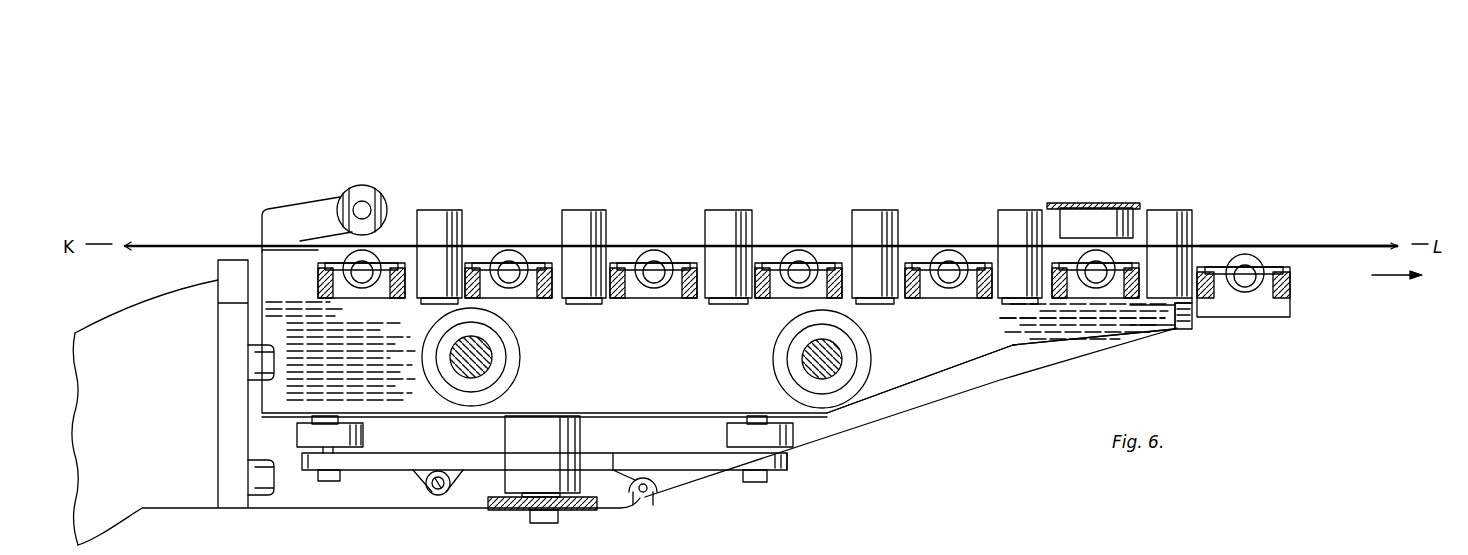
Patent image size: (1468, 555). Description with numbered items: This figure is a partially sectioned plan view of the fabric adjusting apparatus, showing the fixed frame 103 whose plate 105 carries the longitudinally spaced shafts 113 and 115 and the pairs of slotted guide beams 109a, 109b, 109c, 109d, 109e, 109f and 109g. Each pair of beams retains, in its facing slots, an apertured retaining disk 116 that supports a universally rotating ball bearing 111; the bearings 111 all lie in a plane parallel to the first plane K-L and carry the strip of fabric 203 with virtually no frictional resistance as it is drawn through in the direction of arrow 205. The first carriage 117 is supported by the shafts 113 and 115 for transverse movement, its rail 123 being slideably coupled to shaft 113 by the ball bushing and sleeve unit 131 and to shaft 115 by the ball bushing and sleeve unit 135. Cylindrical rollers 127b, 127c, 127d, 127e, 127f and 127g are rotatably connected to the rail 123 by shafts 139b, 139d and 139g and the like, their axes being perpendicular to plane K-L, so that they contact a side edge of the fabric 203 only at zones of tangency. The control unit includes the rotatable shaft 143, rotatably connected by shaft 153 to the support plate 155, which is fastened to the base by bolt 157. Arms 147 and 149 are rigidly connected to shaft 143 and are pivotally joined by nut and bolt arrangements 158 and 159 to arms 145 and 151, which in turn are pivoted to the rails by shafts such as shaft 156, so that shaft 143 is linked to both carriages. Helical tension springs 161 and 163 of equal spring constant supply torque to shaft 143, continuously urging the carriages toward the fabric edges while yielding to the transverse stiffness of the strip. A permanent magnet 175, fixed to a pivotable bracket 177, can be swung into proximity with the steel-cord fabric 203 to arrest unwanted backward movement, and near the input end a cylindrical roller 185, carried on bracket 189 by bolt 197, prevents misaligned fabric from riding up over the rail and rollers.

The fixed frame 103 is at (954, 407).
The plate 105 is at (893, 405).
The slotted guide beam 109a is at (333, 300).
The slotted guide beam 109b is at (480, 300).
The slotted guide beam 109c is at (624, 300).
The slotted guide beam 109d is at (798, 280).
The slotted guide beam 109e is at (918, 300).
The slotted guide beam 109f is at (1065, 300).
The slotted guide beam 109g is at (1222, 318).
The universally rotating ball bearing 111 is at (372, 254).
The shaft 113 is at (482, 357).
The shaft 115 is at (812, 350).
The apertured retaining disk 116 is at (640, 262).
The first carriage 117 is at (999, 387).
The rail 123 is at (938, 358).
The cylindrical roller 127b is at (447, 212).
The cylindrical roller 127c is at (585, 212).
The cylindrical roller 127d is at (730, 212).
The cylindrical roller 127e is at (880, 212).
The cylindrical roller 127f is at (1018, 212).
The cylindrical roller 127g is at (1165, 212).
The ball bushing and sleeve unit 131 is at (497, 372).
The ball bushing and sleeve unit 135 is at (797, 365).
The roller shaft 139b is at (430, 304).
The roller shaft 139d is at (718, 304).
The roller shaft 139g is at (1188, 330).
The rotatable shaft 143 is at (580, 436).
The arm 145 is at (300, 437).
The arm 147 is at (373, 470).
The arm 149 is at (678, 455).
The arm 151 is at (795, 440).
The shaft 153 is at (528, 495).
The support plate 155 is at (485, 510).
The shaft 156 is at (312, 420).
The bolt 157 is at (757, 416).
The nut and bolt arrangement 158 is at (362, 448).
The nut and bolt arrangement 159 is at (790, 471).
The helical tension spring 161 is at (432, 494).
The helical tension spring 163 is at (652, 500).
The permanent magnet 175 is at (1085, 220).
The bracket 177 is at (1127, 206).
The cylindrical roller 185 is at (374, 196).
The bracket 189 is at (285, 218).
The bolt 197 is at (360, 206).
The strip of fabric 203 is at (1318, 244).
The arrow 205 is at (1416, 276).